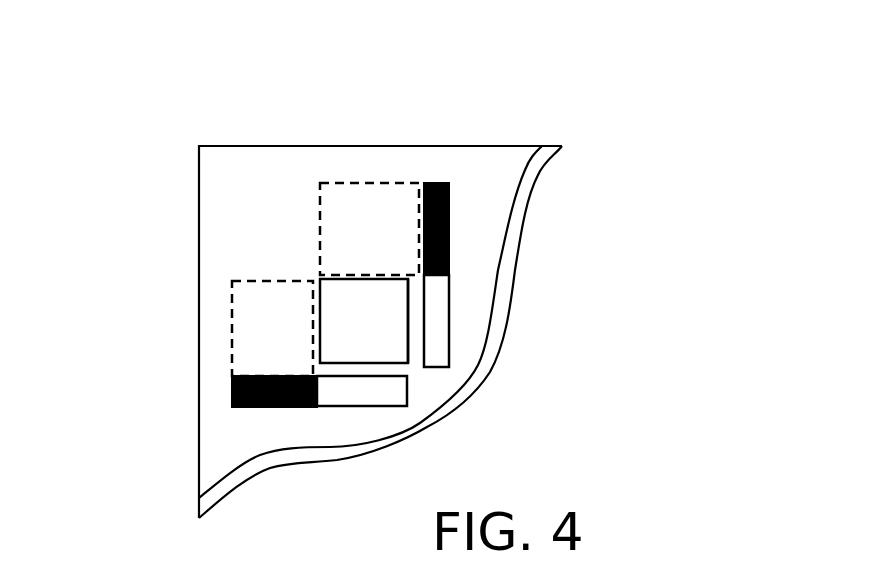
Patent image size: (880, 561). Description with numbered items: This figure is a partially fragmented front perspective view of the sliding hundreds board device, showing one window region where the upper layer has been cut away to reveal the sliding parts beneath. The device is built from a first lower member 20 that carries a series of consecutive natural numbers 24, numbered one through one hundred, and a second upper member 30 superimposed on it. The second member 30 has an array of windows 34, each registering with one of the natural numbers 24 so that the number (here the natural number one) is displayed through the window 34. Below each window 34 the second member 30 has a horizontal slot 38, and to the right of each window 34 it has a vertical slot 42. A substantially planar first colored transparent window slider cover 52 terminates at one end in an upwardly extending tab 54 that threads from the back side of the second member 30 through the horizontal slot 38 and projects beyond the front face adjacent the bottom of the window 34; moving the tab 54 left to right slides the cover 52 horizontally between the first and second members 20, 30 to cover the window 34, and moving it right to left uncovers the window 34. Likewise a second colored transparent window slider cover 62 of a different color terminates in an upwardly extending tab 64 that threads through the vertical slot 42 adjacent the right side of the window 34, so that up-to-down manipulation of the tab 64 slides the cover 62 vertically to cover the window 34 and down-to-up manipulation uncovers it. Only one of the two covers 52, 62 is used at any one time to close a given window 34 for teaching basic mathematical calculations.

The first lower member 20 is at (498, 323).
The second upper member 30 is at (488, 252).
The natural numbers 24 is at (347, 305).
The window 34 is at (408, 365).
The horizontal slot 38 is at (380, 395).
The vertical slot 42 is at (432, 338).
The first colored transparent window slider cover 52 is at (247, 306).
The upwardly extending tab 54 is at (230, 382).
The second colored transparent window slider cover 62 is at (375, 197).
The upwardly extending tab 64 is at (450, 203).